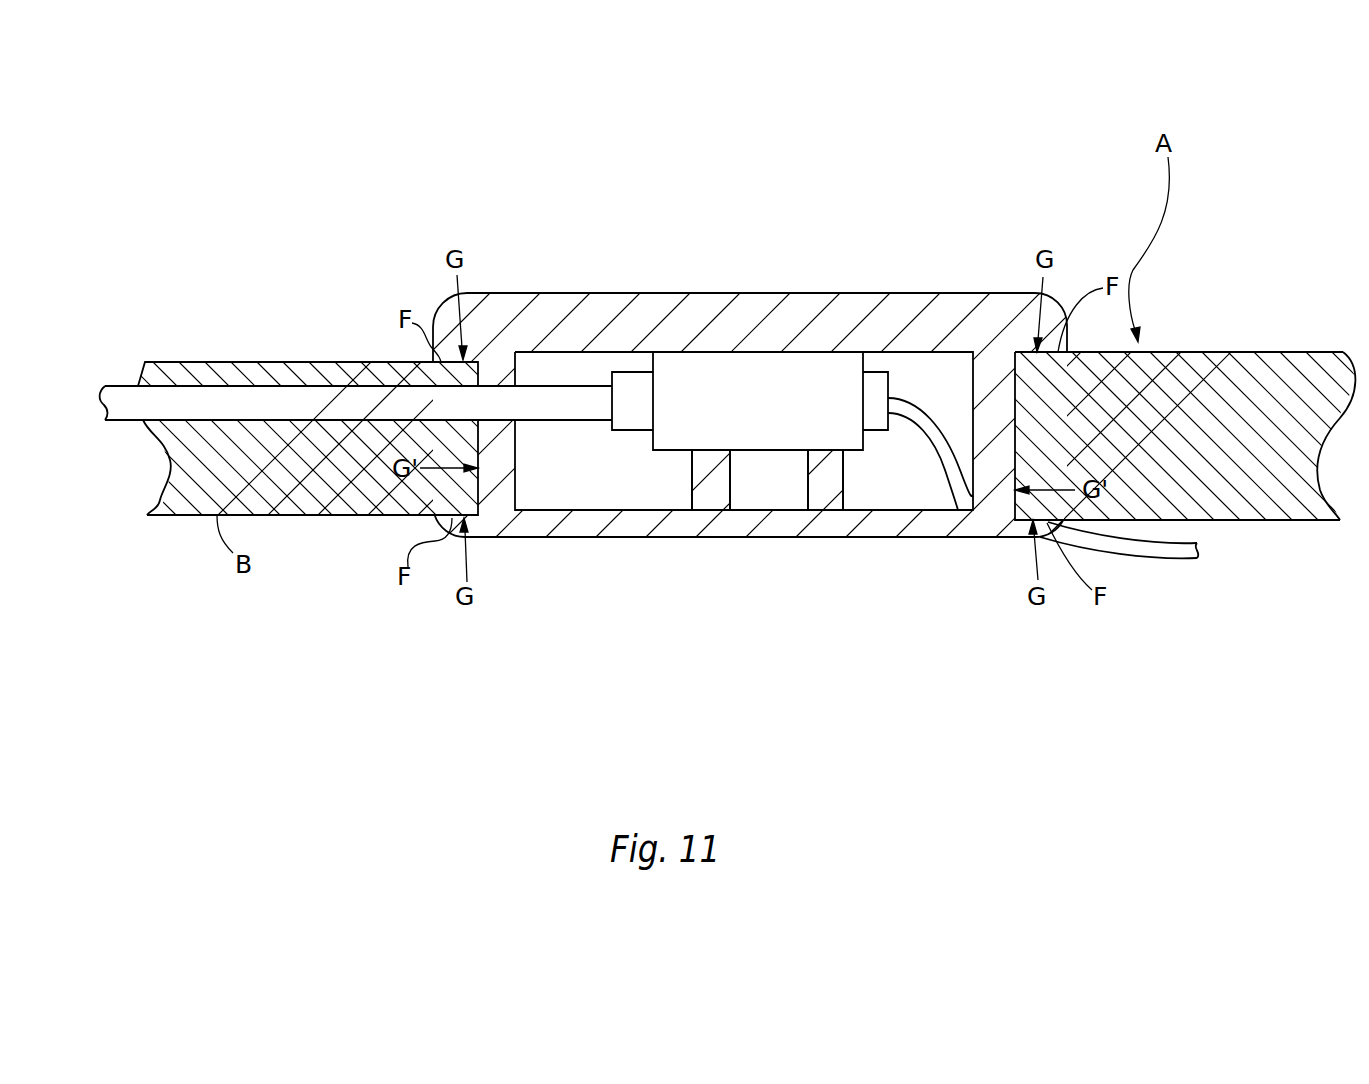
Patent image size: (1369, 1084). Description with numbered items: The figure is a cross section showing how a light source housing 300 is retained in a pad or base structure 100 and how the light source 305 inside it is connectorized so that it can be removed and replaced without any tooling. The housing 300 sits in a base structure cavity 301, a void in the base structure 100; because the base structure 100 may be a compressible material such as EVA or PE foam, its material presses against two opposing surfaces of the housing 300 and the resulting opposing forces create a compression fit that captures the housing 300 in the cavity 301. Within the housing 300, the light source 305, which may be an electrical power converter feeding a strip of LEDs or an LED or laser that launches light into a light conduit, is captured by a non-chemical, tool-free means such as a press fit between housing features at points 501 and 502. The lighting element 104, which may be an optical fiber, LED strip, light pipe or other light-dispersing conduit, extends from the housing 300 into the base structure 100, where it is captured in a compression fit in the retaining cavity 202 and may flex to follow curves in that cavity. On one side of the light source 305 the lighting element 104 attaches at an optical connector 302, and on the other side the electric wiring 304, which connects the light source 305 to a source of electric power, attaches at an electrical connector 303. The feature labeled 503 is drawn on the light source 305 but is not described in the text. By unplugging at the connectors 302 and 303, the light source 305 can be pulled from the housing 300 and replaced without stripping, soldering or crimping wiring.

The base structure 100 is at (1245, 255).
The lighting element 104 is at (364, 400).
The retaining cavity 202 is at (207, 368).
The housing 300 is at (1005, 293).
The base structure cavity 301 is at (955, 412).
The optical connector 302 is at (632, 432).
The electrical connector 303 is at (882, 372).
The electric wiring 304 is at (922, 437).
The light source 305 is at (688, 380).
The press fit point 501 is at (713, 450).
The press fit point 502 is at (827, 450).
The light source top surface 503 is at (748, 352).